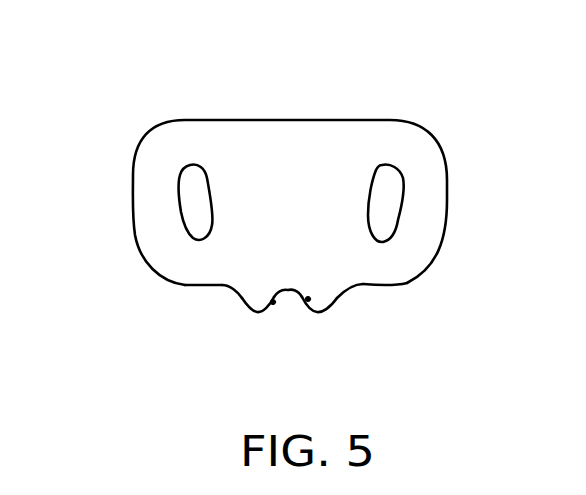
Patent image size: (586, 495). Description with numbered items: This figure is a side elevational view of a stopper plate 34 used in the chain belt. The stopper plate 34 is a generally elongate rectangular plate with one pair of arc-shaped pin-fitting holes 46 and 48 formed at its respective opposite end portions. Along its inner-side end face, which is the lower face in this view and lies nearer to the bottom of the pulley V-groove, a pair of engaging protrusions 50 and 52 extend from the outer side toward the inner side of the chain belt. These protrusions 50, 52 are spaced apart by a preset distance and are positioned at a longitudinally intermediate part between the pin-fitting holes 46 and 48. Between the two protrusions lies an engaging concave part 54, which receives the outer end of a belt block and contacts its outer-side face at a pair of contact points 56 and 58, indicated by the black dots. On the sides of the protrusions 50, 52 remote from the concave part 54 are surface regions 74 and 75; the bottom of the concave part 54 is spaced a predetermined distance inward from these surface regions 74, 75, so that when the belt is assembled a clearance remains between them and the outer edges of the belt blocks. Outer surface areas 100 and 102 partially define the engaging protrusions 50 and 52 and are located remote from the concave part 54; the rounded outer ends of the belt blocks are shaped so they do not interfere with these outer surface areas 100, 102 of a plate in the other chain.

The stopper plate 34 is at (120, 93).
The pin-fitting hole 46 is at (196, 166).
The pin-fitting hole 48 is at (398, 174).
The engaging protrusion 50 is at (250, 301).
The engaging protrusion 52 is at (336, 303).
The engaging concave part 54 is at (297, 293).
The contact point 56 is at (273, 304).
The contact point 58 is at (309, 297).
The surface region 74 is at (190, 284).
The surface region 75 is at (389, 284).
The outer surface area 100 is at (243, 300).
The outer surface area 102 is at (336, 294).